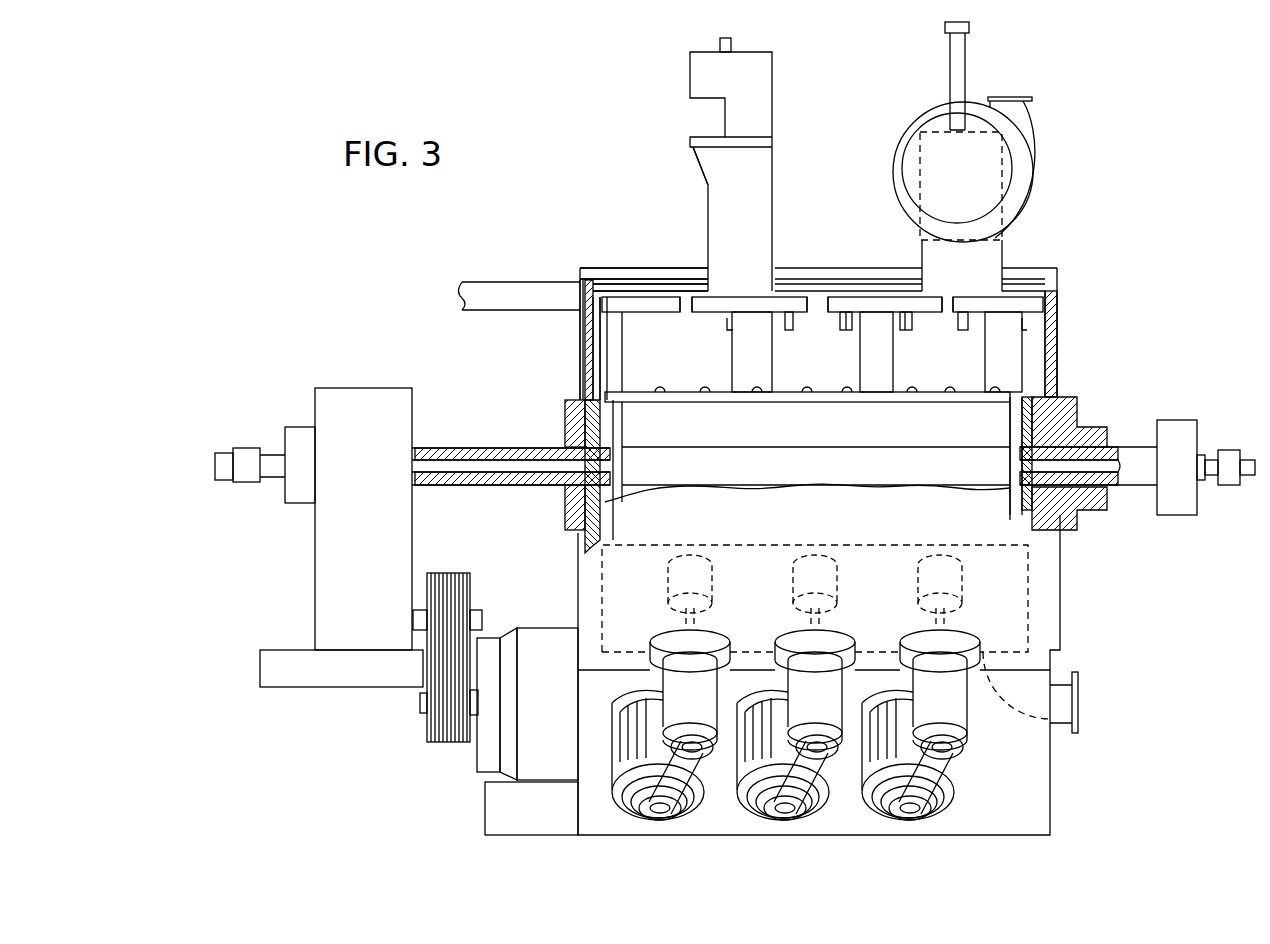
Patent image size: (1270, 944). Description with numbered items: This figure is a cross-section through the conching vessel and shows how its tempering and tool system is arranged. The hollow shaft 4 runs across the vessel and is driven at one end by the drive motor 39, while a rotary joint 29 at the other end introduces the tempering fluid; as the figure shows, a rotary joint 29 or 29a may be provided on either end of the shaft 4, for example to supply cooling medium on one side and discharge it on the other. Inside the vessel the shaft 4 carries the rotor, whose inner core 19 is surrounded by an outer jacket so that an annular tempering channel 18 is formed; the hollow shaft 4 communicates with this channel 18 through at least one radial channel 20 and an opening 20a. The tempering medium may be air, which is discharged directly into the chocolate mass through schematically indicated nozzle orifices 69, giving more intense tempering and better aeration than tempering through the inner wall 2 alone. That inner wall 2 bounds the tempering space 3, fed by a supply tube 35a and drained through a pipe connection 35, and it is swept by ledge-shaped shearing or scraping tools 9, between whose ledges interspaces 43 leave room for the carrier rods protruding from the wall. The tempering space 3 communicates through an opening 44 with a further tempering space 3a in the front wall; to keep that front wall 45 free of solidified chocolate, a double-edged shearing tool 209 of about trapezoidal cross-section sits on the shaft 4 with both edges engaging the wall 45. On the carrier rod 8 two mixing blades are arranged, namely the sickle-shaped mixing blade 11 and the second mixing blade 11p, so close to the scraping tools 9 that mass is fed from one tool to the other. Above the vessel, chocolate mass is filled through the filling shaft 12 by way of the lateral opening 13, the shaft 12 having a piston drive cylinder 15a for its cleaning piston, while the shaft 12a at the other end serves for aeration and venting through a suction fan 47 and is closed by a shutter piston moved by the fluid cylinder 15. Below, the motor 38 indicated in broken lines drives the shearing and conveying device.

The inner peripheral jacket wall 2 is at (655, 282).
The tempering space 3 is at (668, 290).
The further tempering space 3a is at (590, 368).
The hollow shaft 4 is at (472, 450).
The carrier rod 8 is at (760, 360).
The shearing or scraping tools 9 is at (616, 303).
The mixing blade 11 is at (960, 330).
The mixing blade 11p is at (845, 330).
The filling shaft 12 is at (758, 88).
The shaft 12a is at (1002, 217).
The lateral opening 13 is at (697, 127).
The fluid cylinder 15 is at (965, 57).
The piston drive cylinder 15a is at (731, 45).
The tempering channel 18 is at (645, 394).
The inner core 19 is at (652, 403).
The radial channel 20 is at (1012, 424).
The opening 20a is at (1030, 418).
The rotary joint 29 is at (1228, 455).
The rotary joint 29a is at (247, 456).
The pipe connection 35 is at (1080, 702).
The supply tube 35a is at (487, 290).
The motor 38 is at (930, 815).
The drive motor 39 is at (530, 745).
The interspaces 43 is at (686, 294).
The opening 44 is at (584, 281).
The front wall 45 is at (600, 325).
The suction fan 47 is at (1030, 140).
The nozzle orifices 69 is at (704, 387).
The double-edged shearing tool 209 is at (600, 344).